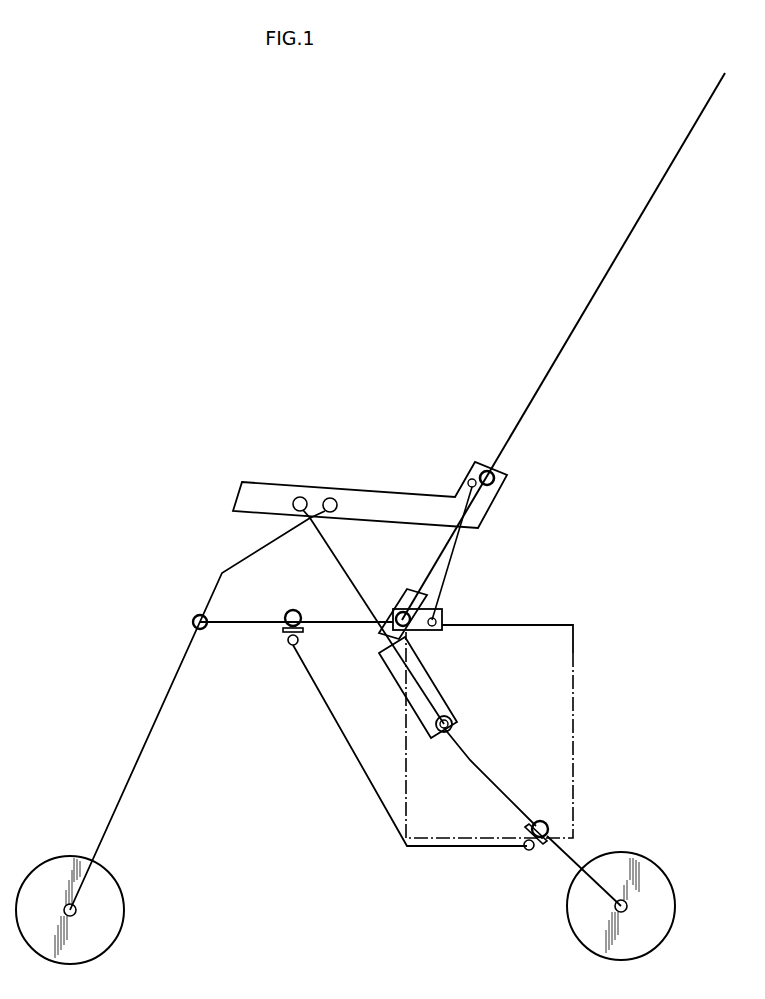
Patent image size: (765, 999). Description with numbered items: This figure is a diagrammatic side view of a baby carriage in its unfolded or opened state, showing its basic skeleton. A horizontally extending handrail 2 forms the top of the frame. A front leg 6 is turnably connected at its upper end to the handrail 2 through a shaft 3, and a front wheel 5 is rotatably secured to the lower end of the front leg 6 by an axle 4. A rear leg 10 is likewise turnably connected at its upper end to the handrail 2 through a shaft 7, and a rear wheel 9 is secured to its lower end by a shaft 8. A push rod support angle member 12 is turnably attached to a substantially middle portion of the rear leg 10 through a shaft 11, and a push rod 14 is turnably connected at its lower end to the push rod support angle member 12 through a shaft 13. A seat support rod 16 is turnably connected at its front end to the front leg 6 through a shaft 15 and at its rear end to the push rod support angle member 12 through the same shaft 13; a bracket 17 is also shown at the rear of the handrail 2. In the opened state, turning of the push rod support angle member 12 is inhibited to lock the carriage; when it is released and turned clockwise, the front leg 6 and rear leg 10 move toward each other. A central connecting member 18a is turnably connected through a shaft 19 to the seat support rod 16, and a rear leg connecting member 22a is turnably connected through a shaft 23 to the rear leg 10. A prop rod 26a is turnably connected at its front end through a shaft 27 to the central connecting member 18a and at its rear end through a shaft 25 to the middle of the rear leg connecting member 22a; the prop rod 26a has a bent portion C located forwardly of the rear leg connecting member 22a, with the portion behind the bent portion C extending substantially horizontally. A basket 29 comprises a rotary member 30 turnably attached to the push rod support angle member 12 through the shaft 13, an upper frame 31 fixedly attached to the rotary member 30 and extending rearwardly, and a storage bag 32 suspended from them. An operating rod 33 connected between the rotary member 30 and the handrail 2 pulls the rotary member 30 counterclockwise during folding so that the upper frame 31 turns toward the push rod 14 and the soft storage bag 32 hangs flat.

The handrail 2 is at (360, 500).
The shaft 3 is at (330, 498).
The axle 4 is at (78, 912).
The front wheel 5 is at (73, 866).
The front leg 6 is at (166, 692).
The shaft 7 is at (299, 497).
The shaft 8 is at (628, 900).
The rear wheel 9 is at (622, 852).
The rear leg 10 is at (495, 787).
The shaft 11 is at (448, 706).
The push rod support angle member 12 is at (425, 688).
The shaft 13 is at (401, 610).
The push rod 14 is at (563, 344).
The shaft 15 is at (201, 632).
The seat support rod 16 is at (255, 621).
The bracket 17 is at (478, 466).
The central connecting member 18a is at (303, 632).
The shaft 19 is at (297, 611).
The rear leg connecting member 22a is at (546, 850).
The shaft 23 is at (546, 820).
The shaft 25 is at (527, 851).
The prop rod 26a is at (345, 735).
The shaft 27 is at (290, 648).
The basket 29 is at (552, 589).
The rotary member 30 is at (444, 608).
The upper frame 31 is at (493, 624).
The storage bag 32 is at (576, 702).
The operating rod 33 is at (455, 546).
The bent portion C is at (386, 857).